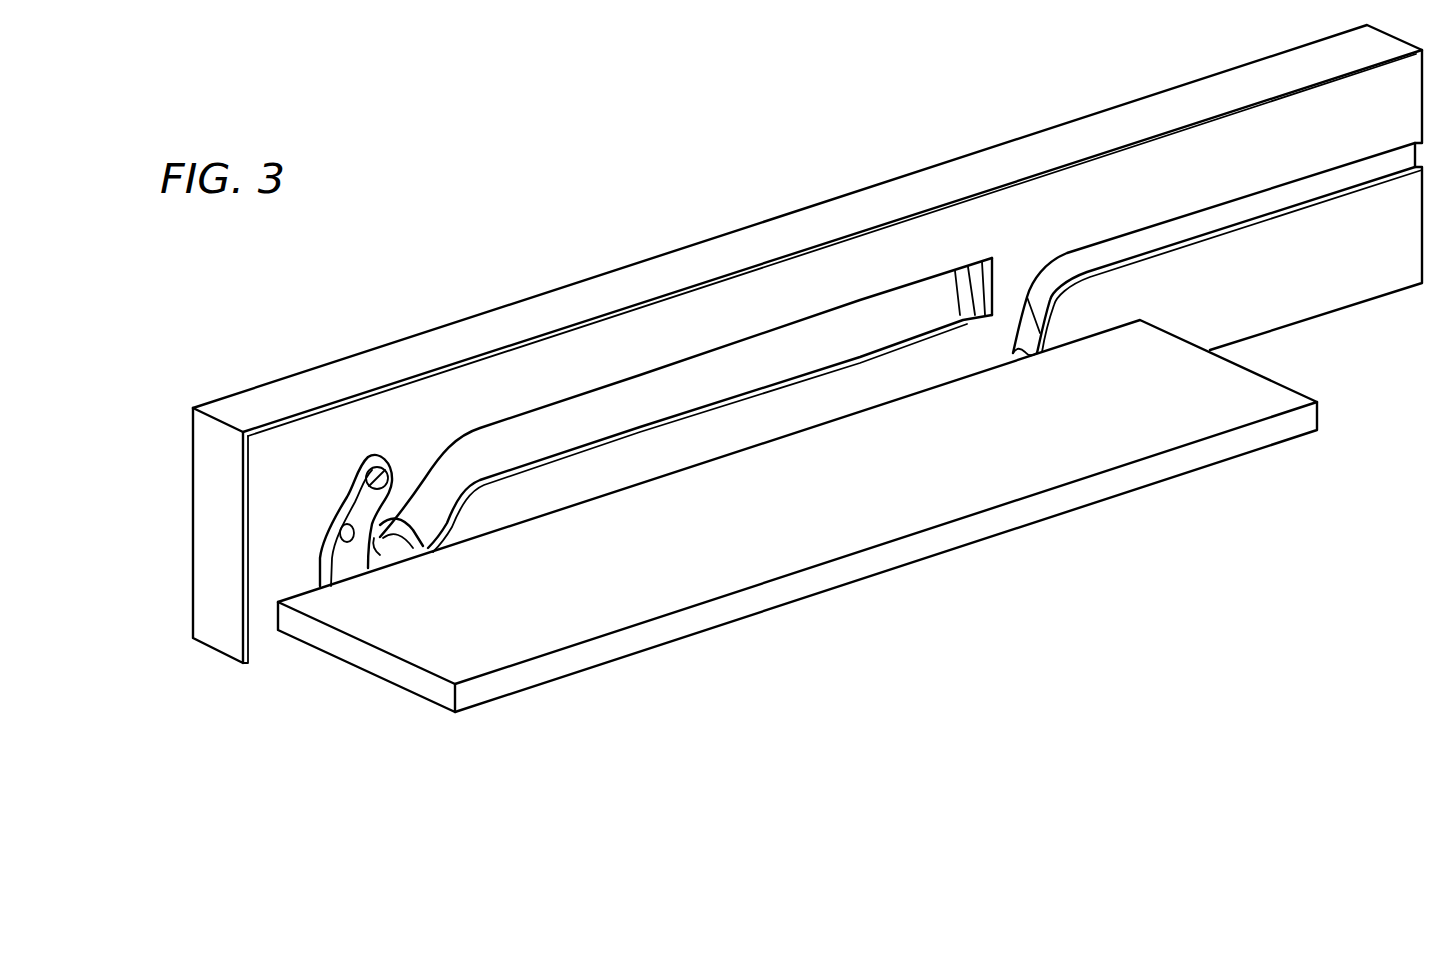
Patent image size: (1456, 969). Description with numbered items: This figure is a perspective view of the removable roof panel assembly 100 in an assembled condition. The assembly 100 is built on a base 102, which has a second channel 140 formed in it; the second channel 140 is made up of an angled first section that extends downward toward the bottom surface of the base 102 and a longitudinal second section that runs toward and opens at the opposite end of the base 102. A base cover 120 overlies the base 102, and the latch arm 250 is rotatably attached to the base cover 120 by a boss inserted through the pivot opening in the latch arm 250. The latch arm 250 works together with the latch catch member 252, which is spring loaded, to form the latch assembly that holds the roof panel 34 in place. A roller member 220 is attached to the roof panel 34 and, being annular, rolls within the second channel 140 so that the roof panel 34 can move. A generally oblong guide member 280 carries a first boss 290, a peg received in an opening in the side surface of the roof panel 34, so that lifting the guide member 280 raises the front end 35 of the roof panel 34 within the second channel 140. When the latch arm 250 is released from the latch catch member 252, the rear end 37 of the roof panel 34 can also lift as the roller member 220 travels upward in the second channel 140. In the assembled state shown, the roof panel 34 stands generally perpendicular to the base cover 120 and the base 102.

The roof panel assembly 100 is at (633, 234).
The base 102 is at (237, 395).
The base cover 120 is at (363, 408).
The second channel 140 is at (718, 366).
The roller member 220 is at (408, 524).
The latch arm 250 is at (317, 527).
The latch catch member 252 is at (440, 540).
The guide member 280 is at (958, 291).
The first boss 290 is at (1022, 360).
The roof panel 34 is at (837, 575).
The front end 35 is at (1283, 383).
The rear end 37 is at (395, 675).